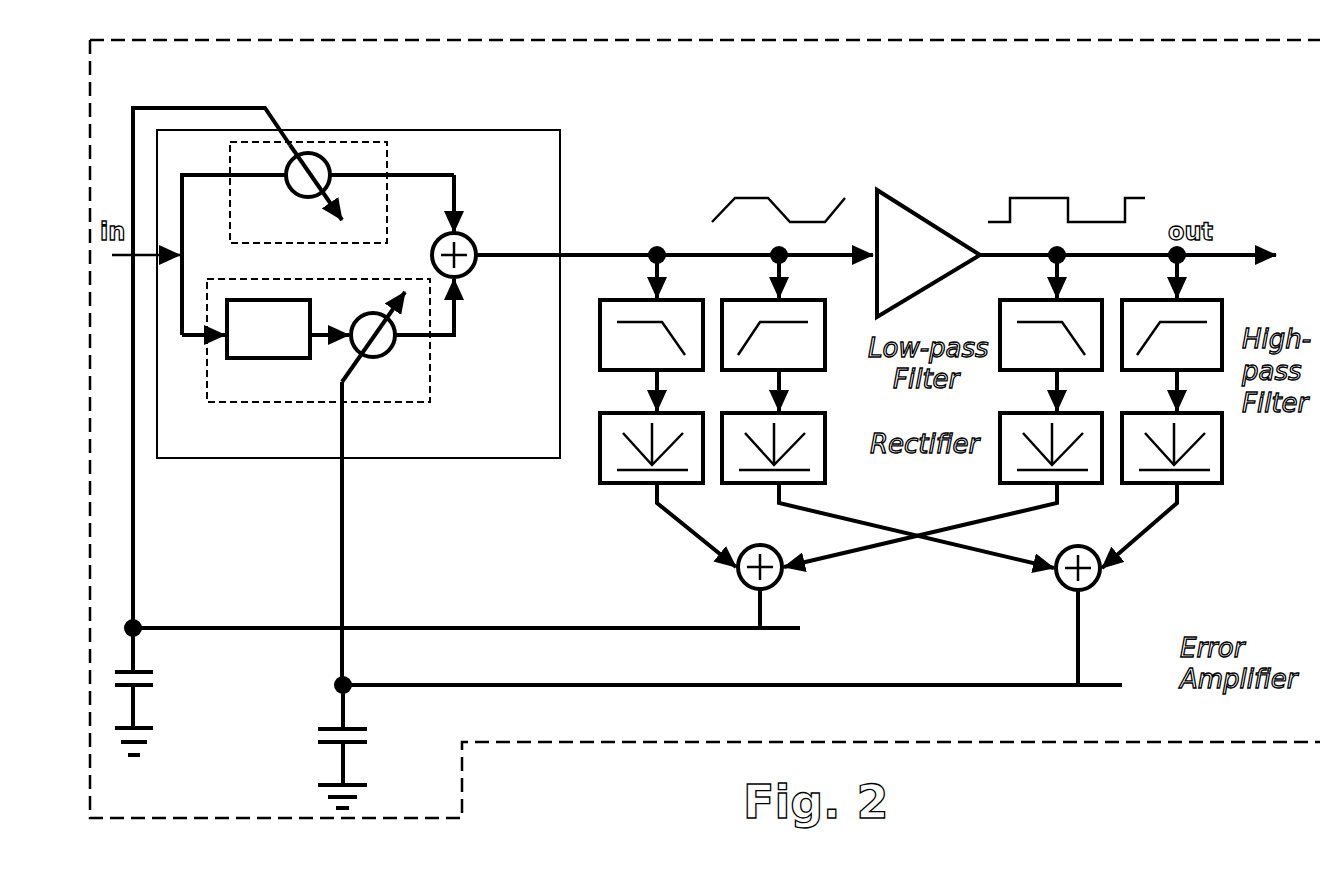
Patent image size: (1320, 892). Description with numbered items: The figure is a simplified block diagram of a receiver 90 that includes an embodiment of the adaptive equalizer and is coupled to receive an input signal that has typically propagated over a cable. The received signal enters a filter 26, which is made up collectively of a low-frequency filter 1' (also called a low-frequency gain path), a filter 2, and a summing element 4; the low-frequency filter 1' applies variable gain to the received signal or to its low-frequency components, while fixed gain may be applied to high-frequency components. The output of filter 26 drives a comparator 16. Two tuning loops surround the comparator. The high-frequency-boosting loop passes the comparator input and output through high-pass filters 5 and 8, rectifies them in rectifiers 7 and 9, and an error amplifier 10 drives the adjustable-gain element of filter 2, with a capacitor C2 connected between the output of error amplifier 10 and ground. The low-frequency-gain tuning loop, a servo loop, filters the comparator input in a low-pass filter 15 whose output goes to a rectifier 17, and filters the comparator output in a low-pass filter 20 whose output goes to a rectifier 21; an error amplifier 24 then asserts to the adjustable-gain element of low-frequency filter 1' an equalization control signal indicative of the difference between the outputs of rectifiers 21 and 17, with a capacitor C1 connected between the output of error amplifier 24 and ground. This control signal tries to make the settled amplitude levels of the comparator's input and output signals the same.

The low-frequency filter 1' is at (302, 151).
The filter 2 is at (271, 415).
The summing element 4 is at (463, 238).
The high-pass filter 5 is at (750, 298).
The rectifier 7 is at (772, 490).
The high-pass filter 8 is at (1229, 330).
The rectifier 9 is at (1205, 488).
The error amplifier 10 is at (1082, 535).
The low-pass filter 15 is at (628, 298).
The comparator 16 is at (900, 193).
The rectifier 17 is at (636, 485).
The low-pass filter 20 is at (1035, 298).
The rectifier 21 is at (996, 468).
The error amplifier 24 is at (772, 533).
The filter 26 is at (530, 462).
The receiver 90 is at (1110, 745).
The capacitor C1 is at (161, 687).
The capacitor C2 is at (375, 742).